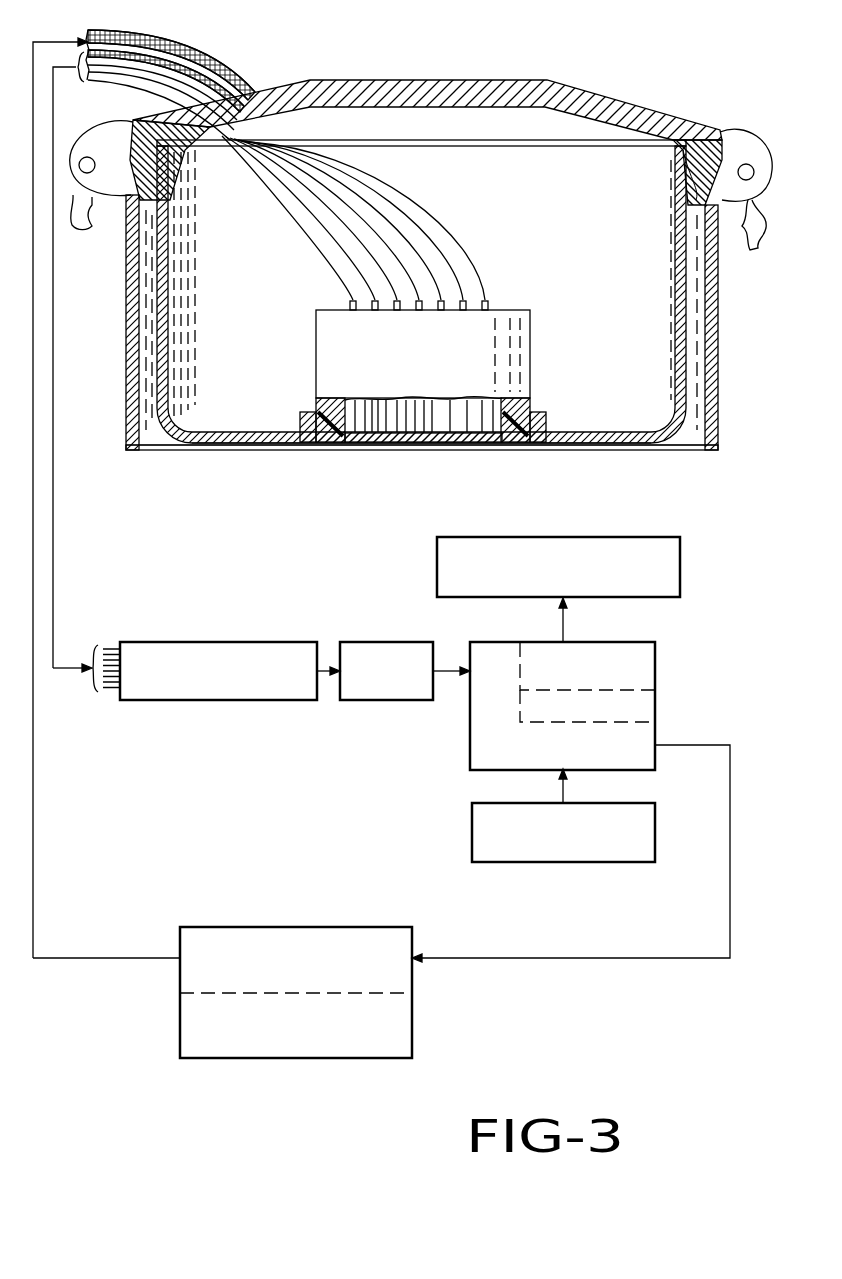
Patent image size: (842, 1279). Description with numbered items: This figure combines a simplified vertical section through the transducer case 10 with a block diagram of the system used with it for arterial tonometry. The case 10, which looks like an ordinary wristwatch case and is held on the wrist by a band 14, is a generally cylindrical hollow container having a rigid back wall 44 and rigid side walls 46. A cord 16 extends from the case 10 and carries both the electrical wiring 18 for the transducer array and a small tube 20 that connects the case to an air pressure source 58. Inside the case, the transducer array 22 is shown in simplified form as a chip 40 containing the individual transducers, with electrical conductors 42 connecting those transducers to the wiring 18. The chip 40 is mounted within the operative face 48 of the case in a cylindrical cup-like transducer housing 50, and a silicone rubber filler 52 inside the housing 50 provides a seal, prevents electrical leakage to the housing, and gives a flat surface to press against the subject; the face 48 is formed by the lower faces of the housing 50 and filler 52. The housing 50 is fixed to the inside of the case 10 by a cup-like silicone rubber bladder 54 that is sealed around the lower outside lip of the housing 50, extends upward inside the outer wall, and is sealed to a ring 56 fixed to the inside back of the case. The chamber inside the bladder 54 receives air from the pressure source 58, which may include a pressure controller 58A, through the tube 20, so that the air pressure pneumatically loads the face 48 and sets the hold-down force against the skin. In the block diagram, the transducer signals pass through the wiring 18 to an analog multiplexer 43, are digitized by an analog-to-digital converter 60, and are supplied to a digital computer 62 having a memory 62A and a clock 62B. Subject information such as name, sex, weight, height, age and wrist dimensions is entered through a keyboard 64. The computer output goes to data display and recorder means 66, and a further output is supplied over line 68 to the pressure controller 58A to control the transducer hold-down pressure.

The transducer housing, or case 10 is at (566, 64).
The band 14 is at (752, 210).
The cord 16 is at (132, 34).
The wiring 18 is at (115, 86).
The tube 20 is at (166, 50).
The transducer array 22 is at (402, 448).
The chip 40 is at (447, 444).
The electrical conductors 42 is at (412, 425).
The multiplexer 43 is at (201, 642).
The back wall 44 is at (392, 78).
The side walls 46 is at (718, 450).
The face 48 is at (247, 444).
The transducer housing 50 is at (530, 338).
The silicone rubber filler 52 is at (336, 442).
The bladder 54 is at (673, 346).
The ring 56 is at (690, 168).
The air pressure source 58 is at (421, 1043).
The pressure controller 58A is at (207, 927).
The analog-to-digital converter 60 is at (378, 642).
The digital computer 62 is at (463, 731).
The memory 62A is at (656, 660).
The clock 62B is at (656, 702).
The keyboard 64 is at (472, 824).
The data display and recorder means 66 is at (681, 548).
The line 68 is at (676, 958).